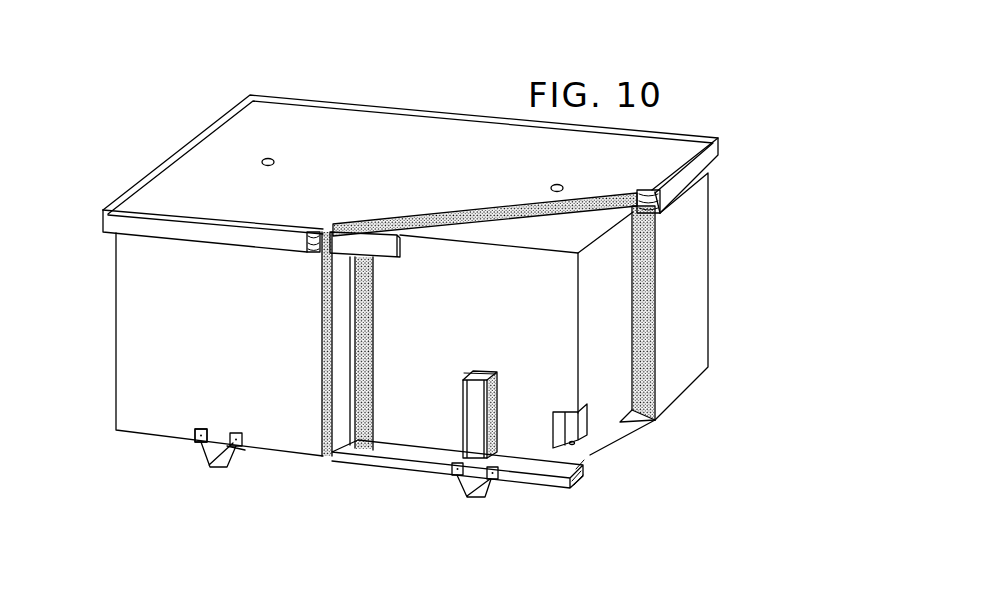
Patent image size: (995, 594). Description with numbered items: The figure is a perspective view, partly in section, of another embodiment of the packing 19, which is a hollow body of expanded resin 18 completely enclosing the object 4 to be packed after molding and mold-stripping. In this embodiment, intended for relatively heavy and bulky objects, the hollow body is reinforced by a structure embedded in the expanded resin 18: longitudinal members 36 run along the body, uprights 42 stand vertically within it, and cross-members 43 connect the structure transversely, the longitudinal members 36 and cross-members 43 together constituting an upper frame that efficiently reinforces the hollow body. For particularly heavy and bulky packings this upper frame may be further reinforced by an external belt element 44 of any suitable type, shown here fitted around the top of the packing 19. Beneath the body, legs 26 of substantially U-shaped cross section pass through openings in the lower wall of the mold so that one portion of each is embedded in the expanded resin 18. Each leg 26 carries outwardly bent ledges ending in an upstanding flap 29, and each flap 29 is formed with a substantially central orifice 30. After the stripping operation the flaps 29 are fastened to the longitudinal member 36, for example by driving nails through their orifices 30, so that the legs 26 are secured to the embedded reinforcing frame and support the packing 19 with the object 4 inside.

The object to be packed 4 is at (603, 420).
The resin 18 is at (643, 313).
The packing 19 is at (101, 348).
The leg 26 is at (247, 453).
The upstanding flap 29 is at (234, 433).
The orifice 30 is at (197, 441).
The longitudinal member 36 is at (393, 460).
The upright 42 is at (356, 346).
The cross-member 43 is at (634, 218).
The external belt element 44 is at (113, 221).